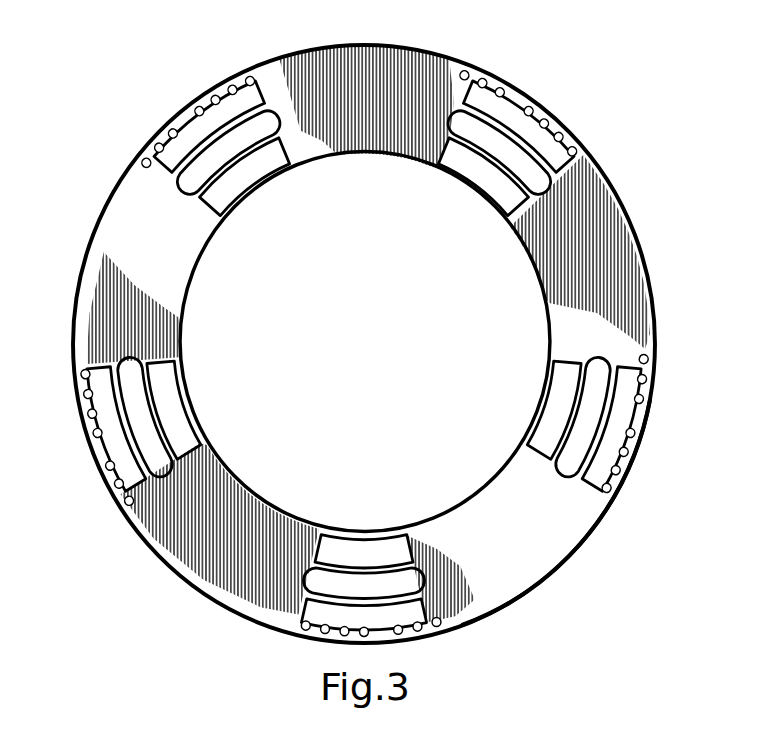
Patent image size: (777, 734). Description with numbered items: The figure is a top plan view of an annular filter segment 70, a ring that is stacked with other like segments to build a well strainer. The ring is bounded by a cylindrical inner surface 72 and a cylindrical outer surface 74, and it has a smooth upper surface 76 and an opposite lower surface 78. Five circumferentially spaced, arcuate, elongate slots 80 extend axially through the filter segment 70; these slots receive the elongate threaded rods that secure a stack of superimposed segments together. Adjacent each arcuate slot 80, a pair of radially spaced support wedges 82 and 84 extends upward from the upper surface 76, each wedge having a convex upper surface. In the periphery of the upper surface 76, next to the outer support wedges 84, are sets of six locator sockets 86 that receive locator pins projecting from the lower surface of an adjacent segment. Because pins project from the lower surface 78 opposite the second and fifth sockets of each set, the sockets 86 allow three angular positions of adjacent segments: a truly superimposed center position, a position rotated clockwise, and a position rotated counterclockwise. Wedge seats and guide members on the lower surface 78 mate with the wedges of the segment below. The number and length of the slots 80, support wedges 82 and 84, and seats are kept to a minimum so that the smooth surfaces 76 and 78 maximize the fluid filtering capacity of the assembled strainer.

The annular filter segment 70 is at (618, 60).
The cylindrical inner surface 72 is at (365, 341).
The cylindrical outer surface 74 is at (556, 512).
The upper surface 76 is at (368, 333).
The lower surface 78 is at (364, 344).
The arcuate elongate slot 80 is at (364, 350).
The support wedge 82 is at (364, 350).
The support wedge 84 is at (364, 352).
The locator socket 86 is at (366, 348).